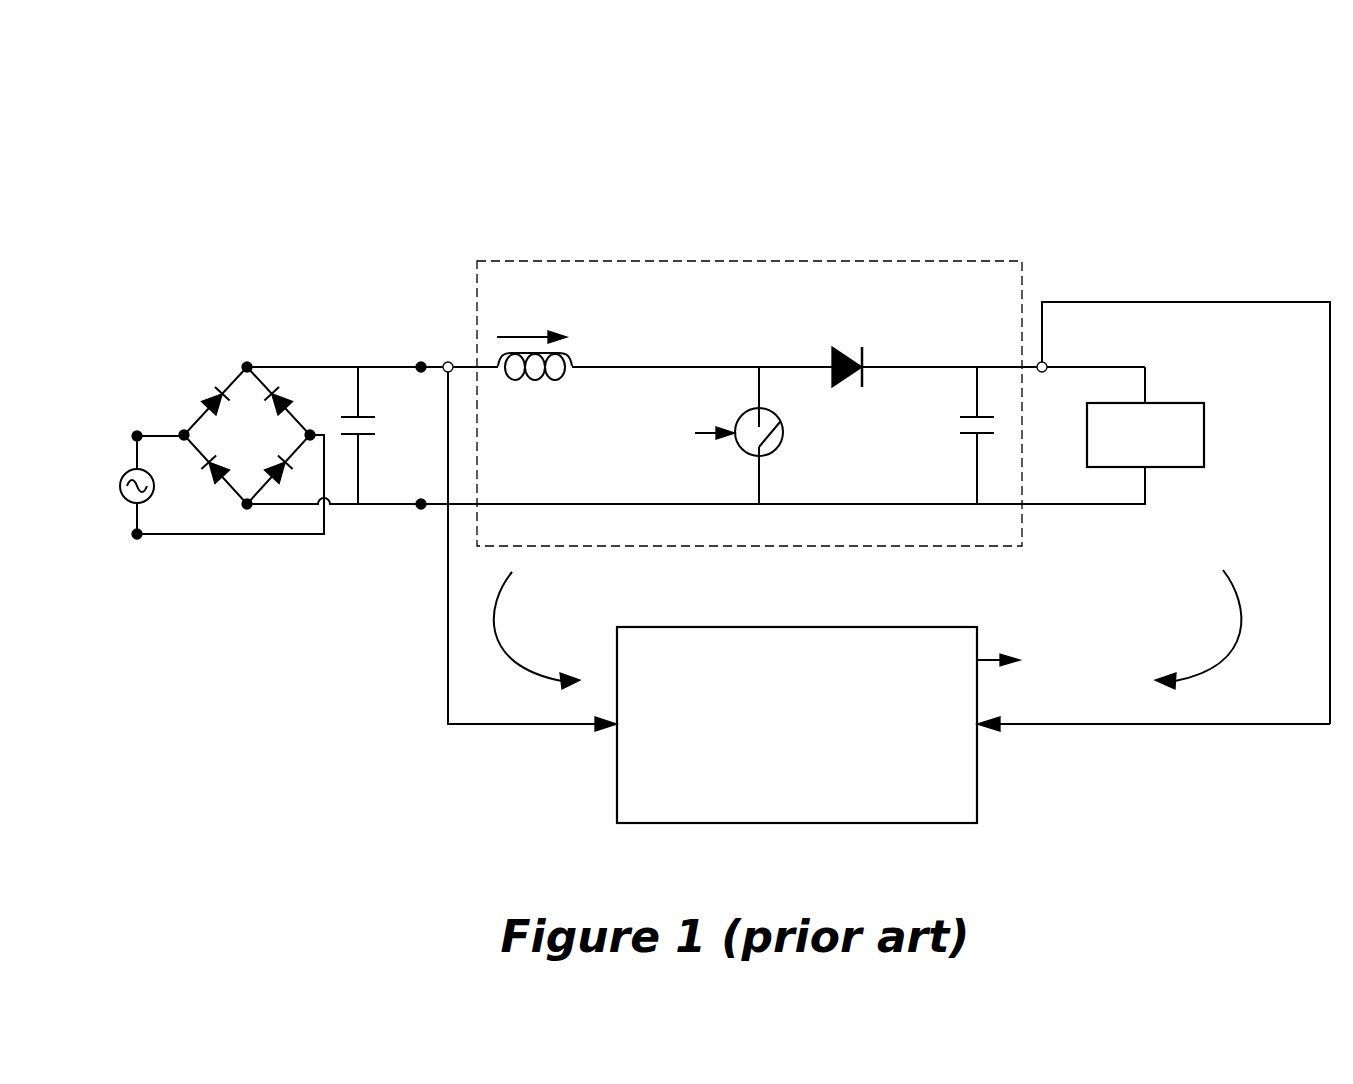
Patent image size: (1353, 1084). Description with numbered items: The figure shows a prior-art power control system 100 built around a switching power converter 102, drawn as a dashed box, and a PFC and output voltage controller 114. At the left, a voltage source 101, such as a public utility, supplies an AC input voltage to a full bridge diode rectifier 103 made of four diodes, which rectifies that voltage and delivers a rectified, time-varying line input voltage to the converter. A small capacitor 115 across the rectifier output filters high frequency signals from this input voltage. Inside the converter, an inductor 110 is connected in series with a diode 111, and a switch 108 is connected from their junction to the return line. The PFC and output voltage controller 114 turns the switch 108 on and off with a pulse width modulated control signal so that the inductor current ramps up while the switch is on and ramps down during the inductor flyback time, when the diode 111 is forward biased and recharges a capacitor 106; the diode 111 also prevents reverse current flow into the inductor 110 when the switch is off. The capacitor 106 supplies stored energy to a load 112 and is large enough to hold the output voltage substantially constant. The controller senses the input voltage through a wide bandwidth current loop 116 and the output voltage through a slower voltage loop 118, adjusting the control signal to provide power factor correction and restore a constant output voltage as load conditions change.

The power control system 100 is at (1002, 143).
The voltage source 101 is at (126, 498).
The switching power converter 102 is at (517, 260).
The full bridge diode rectifier 103 is at (228, 447).
The capacitor 106 is at (968, 436).
The switch 108 is at (748, 456).
The inductor 110 is at (515, 380).
The diode 111 is at (840, 347).
The load 112 is at (1162, 402).
The PFC and output voltage controller 114 is at (862, 627).
The small capacitor 115 is at (363, 437).
The current loop 116 is at (537, 630).
The voltage loop 118 is at (1198, 629).